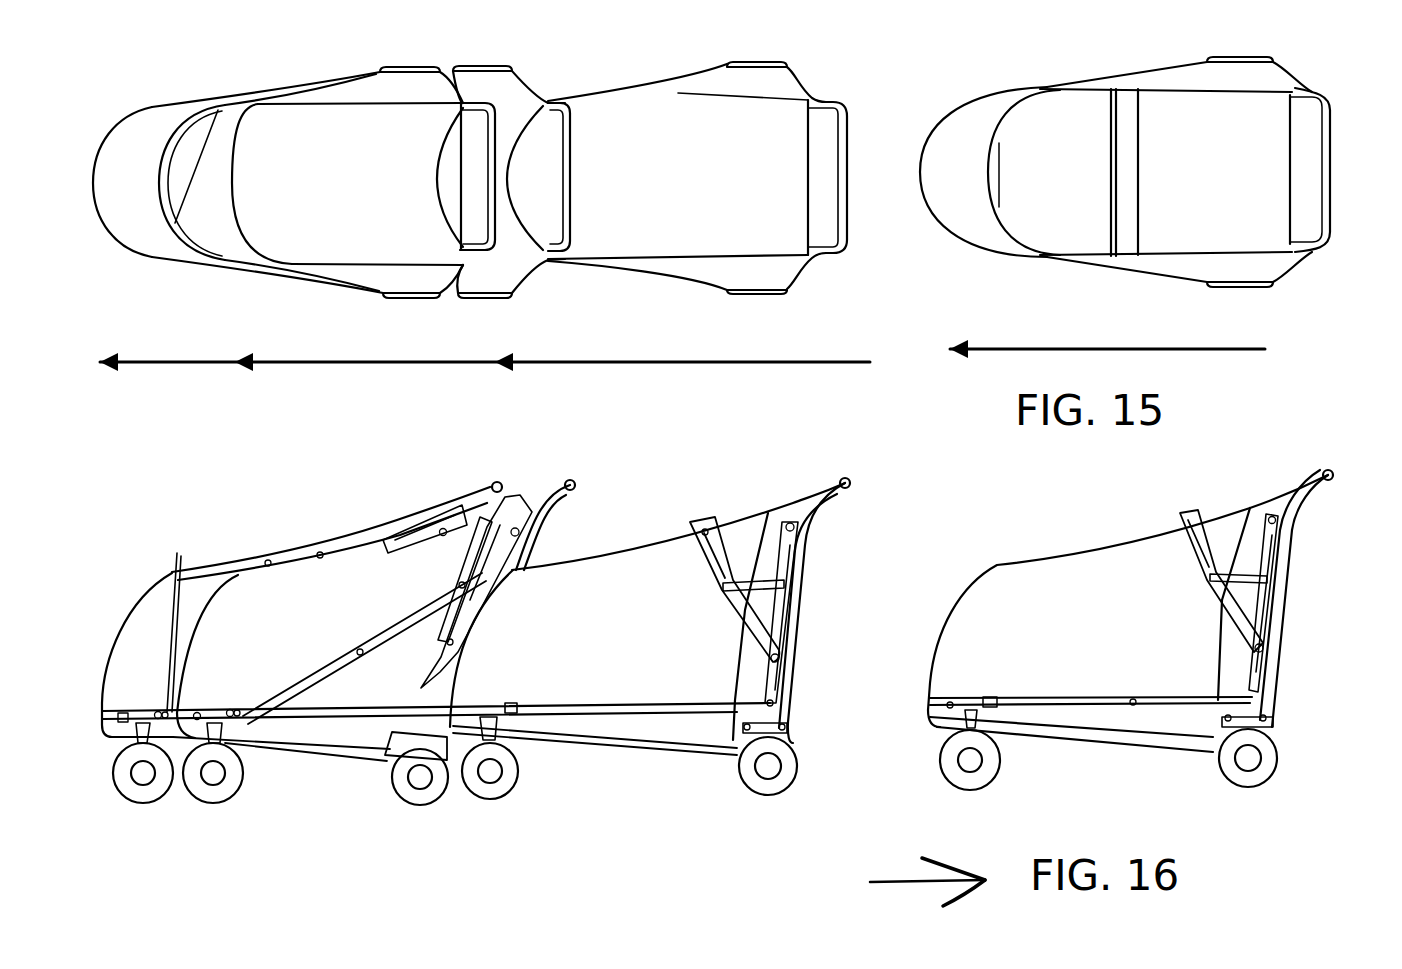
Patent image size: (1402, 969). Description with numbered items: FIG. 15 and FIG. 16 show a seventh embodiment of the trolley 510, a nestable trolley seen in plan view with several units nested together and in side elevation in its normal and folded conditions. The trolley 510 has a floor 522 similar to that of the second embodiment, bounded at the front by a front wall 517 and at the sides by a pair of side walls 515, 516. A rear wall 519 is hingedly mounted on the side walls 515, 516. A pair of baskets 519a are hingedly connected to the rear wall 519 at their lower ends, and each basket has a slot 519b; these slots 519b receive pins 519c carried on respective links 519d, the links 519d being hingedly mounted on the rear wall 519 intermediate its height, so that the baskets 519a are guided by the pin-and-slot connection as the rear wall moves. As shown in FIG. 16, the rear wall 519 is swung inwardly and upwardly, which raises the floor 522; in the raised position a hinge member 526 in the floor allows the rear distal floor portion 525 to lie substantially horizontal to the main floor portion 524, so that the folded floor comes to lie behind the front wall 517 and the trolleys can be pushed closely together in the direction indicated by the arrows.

In FIG. 15, the nestable cart 510 is at (913, 80).
In FIG. 15, the side wall 515 is at (1117, 82).
In FIG. 15, the side wall 516 is at (1123, 257).
In FIG. 15, the front wall 517 is at (955, 210).
In FIG. 16, the rear wall 519 is at (1260, 630).
In FIG. 16, the baskets 519a is at (1185, 554).
In FIG. 16, the slots 519b is at (698, 539).
In FIG. 16, the pins 519c is at (745, 587).
In FIG. 16, the links 519d is at (1250, 572).
In FIG. 16, the floor 522 is at (1100, 712).
In FIG. 16, the main floor portion 524 is at (1057, 710).
In FIG. 16, the rear distal floor portion 525 is at (1177, 705).
In FIG. 16, the hinge member 526 is at (1130, 697).